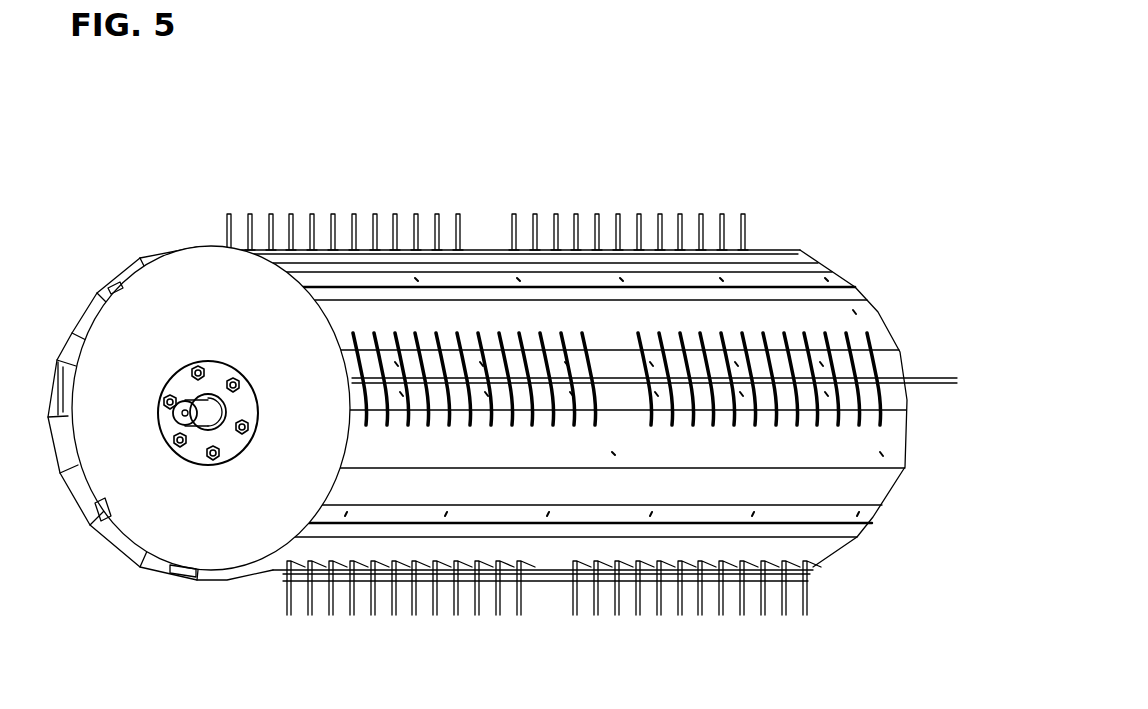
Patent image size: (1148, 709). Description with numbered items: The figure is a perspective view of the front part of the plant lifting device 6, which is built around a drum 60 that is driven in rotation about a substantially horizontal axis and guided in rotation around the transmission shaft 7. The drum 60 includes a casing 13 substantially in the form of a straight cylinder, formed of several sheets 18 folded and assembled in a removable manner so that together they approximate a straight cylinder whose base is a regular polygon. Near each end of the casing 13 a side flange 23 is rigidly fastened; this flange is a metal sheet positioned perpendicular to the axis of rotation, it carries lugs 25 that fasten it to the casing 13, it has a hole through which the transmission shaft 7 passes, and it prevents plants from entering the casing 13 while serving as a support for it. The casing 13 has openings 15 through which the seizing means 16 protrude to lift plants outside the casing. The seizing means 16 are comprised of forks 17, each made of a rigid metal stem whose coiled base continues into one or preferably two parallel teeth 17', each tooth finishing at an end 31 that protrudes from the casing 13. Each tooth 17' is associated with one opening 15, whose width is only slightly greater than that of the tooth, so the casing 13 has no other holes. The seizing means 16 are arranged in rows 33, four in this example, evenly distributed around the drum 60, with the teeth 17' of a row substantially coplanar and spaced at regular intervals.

The plant lifting device 6 is at (875, 148).
The transmission shaft 7 is at (182, 405).
The casing 13 is at (70, 335).
The openings 15 is at (823, 413).
The seizing means 16 is at (205, 214).
The fork 17 is at (628, 232).
The tooth 17' is at (646, 186).
The sheet 18 is at (632, 334).
The side flange 23 is at (249, 519).
The lugs 25 is at (175, 570).
The end 31 is at (395, 212).
The rows 33 is at (900, 358).
The drum 60 is at (870, 277).